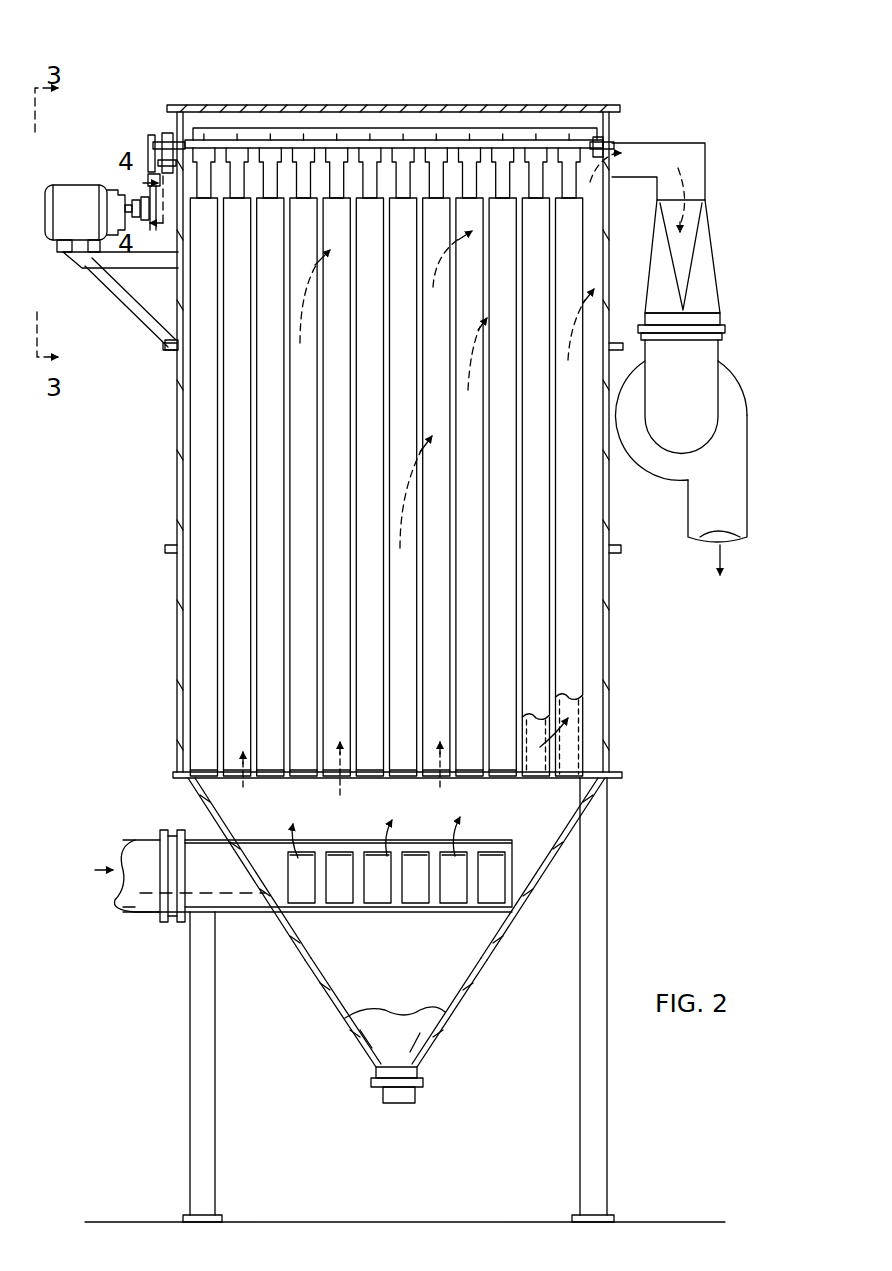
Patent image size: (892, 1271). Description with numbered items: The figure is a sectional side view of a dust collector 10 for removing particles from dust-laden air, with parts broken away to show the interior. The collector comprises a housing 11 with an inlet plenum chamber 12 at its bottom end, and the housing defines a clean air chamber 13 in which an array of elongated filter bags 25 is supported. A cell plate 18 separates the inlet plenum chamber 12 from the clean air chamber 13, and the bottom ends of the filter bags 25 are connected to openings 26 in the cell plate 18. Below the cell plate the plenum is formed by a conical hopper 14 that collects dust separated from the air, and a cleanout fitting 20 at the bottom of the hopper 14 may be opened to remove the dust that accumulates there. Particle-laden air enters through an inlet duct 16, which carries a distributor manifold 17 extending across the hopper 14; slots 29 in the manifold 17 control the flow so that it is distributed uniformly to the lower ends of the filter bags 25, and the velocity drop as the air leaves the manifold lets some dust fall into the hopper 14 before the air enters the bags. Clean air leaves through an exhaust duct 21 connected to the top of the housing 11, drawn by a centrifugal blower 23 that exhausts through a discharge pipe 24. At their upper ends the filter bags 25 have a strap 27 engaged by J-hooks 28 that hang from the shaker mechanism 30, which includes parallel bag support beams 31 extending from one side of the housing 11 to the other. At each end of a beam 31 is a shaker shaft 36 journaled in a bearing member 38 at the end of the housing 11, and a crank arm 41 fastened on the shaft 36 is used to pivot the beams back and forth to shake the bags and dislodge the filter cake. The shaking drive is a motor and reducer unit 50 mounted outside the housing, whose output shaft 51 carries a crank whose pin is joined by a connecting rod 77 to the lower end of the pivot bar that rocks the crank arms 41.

The dust collector 10 is at (607, 55).
The housing 11 is at (614, 617).
The inlet plenum chamber 12 is at (540, 850).
The clean air chamber 13 is at (330, 105).
The conical hopper 14 is at (474, 985).
The inlet duct 16 is at (150, 915).
The distributor manifold 17 is at (356, 910).
The cell plate 18 is at (590, 771).
The cleanout fitting 20 is at (418, 1095).
The exhaust duct 21 is at (658, 153).
The centrifugal blower 23 is at (728, 386).
The discharge pipe 24 is at (734, 509).
The filter bag 25 is at (240, 621).
The opening 26 is at (531, 776).
The strap 27 is at (301, 200).
The J-hook 28 is at (300, 148).
The slot 29 is at (361, 860).
The shaker mechanism 30 is at (150, 110).
The bag support beam 31 is at (479, 128).
The shaker shaft 36 is at (180, 145).
The bearing member 38 is at (168, 132).
The crank arm 41 is at (150, 140).
The motor and reducer unit 50 is at (76, 192).
The output shaft 51 is at (135, 200).
The connecting rod 77 is at (163, 190).